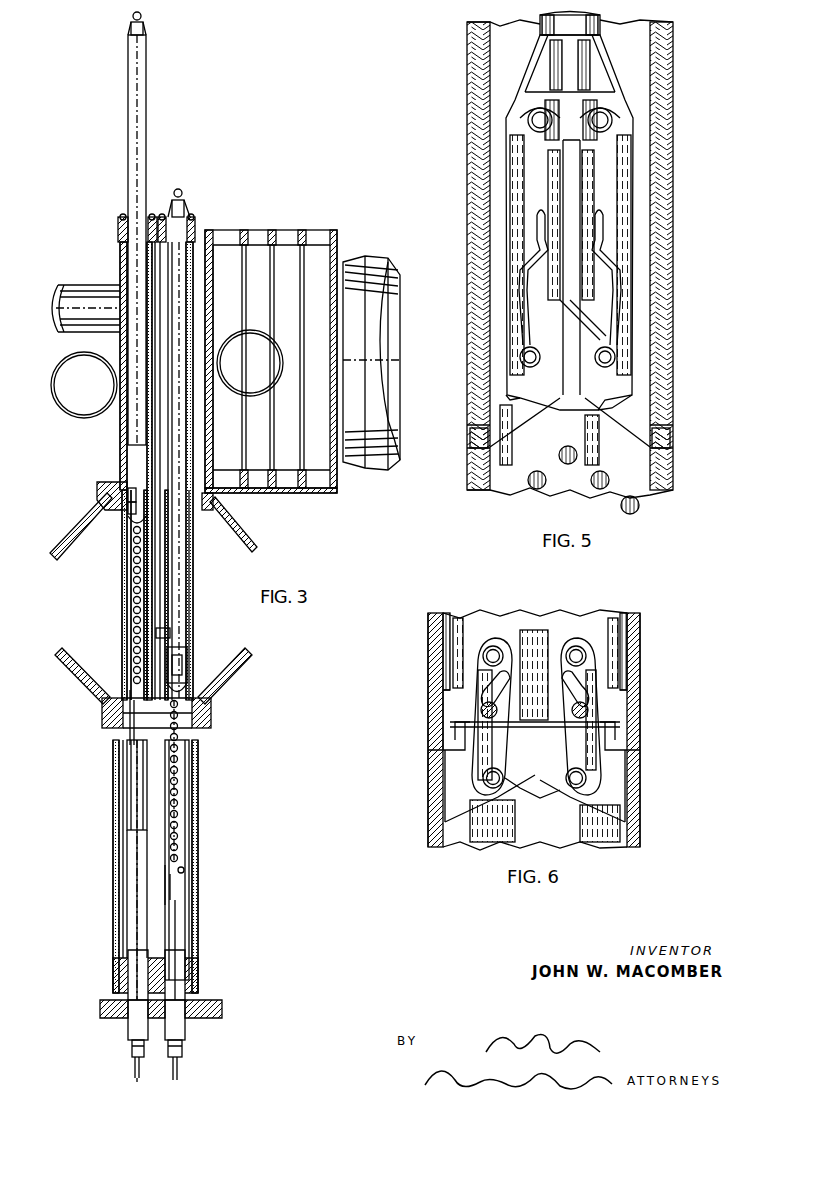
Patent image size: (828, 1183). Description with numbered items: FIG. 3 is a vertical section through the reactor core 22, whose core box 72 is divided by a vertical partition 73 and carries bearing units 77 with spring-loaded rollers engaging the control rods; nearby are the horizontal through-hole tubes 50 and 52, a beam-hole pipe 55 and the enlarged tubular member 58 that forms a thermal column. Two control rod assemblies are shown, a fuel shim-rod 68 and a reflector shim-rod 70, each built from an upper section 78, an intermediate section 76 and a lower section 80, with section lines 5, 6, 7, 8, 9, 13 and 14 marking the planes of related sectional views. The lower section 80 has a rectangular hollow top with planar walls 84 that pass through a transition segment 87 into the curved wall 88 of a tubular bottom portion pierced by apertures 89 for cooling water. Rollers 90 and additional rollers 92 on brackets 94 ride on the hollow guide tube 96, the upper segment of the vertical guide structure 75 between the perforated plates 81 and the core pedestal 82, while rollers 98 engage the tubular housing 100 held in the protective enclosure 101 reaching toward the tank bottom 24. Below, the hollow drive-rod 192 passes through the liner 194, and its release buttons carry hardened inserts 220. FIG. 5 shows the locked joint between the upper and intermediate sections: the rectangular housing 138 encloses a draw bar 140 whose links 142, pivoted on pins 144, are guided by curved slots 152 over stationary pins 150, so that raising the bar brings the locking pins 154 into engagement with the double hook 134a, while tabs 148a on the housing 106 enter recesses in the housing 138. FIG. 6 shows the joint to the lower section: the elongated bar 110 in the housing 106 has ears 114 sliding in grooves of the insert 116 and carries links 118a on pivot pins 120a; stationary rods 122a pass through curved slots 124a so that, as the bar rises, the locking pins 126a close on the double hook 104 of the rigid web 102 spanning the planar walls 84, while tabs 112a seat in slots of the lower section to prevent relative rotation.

In FIG. 3, the section line 8— 8 is at (138, 10).
In FIG. 3, the upper section 78 is at (152, 125).
In FIG. 3, the reflector shim-rod 70 is at (118, 172).
In FIG. 3, the control rod assembly 68 is at (186, 192).
In FIG. 3, the bearing unit 77 is at (118, 228).
In FIG. 3, the reactor core 22 is at (306, 222).
In FIG. 3, the core box 72 is at (262, 240).
In FIG. 3, the vertical partition 73 is at (216, 330).
In FIG. 3, the tube 52 is at (255, 332).
In FIG. 3, the pipe 55 is at (108, 284).
In FIG. 3, the tube 50 is at (68, 418).
In FIG. 3, the intermediate section 76 is at (118, 348).
In FIG. 6, the intermediate section 76 is at (638, 612).
In FIG. 3, the tubular member 58 is at (380, 468).
In FIG. 3, the section line 5— 5 is at (190, 480).
In FIG. 3, the section line 9— 9 is at (165, 450).
In FIG. 3, the section line 7— 7 is at (195, 640).
In FIG. 3, the section line 6— 6 is at (180, 592).
In FIG. 3, the roller 90 is at (132, 480).
In FIG. 3, the rollers 92 is at (126, 490).
In FIG. 3, the brackets 94 is at (132, 510).
In FIG. 3, the transition segment 87 is at (130, 522).
In FIG. 3, the core pedestal 82 is at (82, 518).
In FIG. 3, the hollow guide tube 96 is at (122, 560).
In FIG. 3, the vertical guide structure 75 is at (115, 585).
In FIG. 3, the apertures 89 is at (132, 596).
In FIG. 3, the lower section 80 is at (120, 678).
In FIG. 6, the lower section 80 is at (642, 826).
In FIG. 3, the rollers 98 is at (128, 698).
In FIG. 3, the perforated plates 81 is at (72, 668).
In FIG. 3, the section line 13— 13 is at (115, 740).
In FIG. 3, the section line 14— 14 is at (198, 740).
In FIG. 3, the curved wall 88 is at (128, 798).
In FIG. 3, the protective enclosure 101 is at (112, 834).
In FIG. 3, the tubular housing 100 is at (128, 890).
In FIG. 3, the bottom 24 is at (100, 1012).
In FIG. 3, the liner 194 is at (128, 1028).
In FIG. 3, the drive-rod 192 is at (132, 1048).
In FIG. 3, the hardened insert 220 is at (134, 1070).
In FIG. 5, the hollow housing 138 is at (674, 245).
In FIG. 5, the outer housing 106 is at (674, 496).
In FIG. 6, the outer housing 106 is at (642, 668).
In FIG. 5, the draw bar 140 is at (596, 30).
In FIG. 5, the links 142 is at (560, 182).
In FIG. 5, the pivot pins 144 is at (596, 108).
In FIG. 5, the curved slots 152 is at (535, 312).
In FIG. 5, the double hook 134a is at (612, 332).
In FIG. 5, the stationary pins 150 is at (538, 312).
In FIG. 5, the locking pins 154 is at (608, 366).
In FIG. 5, the mating tabs 148a is at (462, 437).
In FIG. 6, the elongated bar 110 is at (508, 612).
In FIG. 6, the insert 116 is at (432, 678).
In FIG. 6, the planar walls 84 is at (428, 810).
In FIG. 6, the double hook 104 is at (600, 728).
In FIG. 6, the tabs 112a is at (428, 748).
In FIG. 6, the pivot pins 120a is at (492, 646).
In FIG. 6, the spaced links 118a is at (508, 636).
In FIG. 6, the curved slots 124a is at (505, 694).
In FIG. 6, the rods 122a is at (498, 716).
In FIG. 6, the ears 114 is at (455, 720).
In FIG. 6, the locking pins 126a is at (540, 798).
In FIG. 6, the rigid web 102 is at (560, 846).